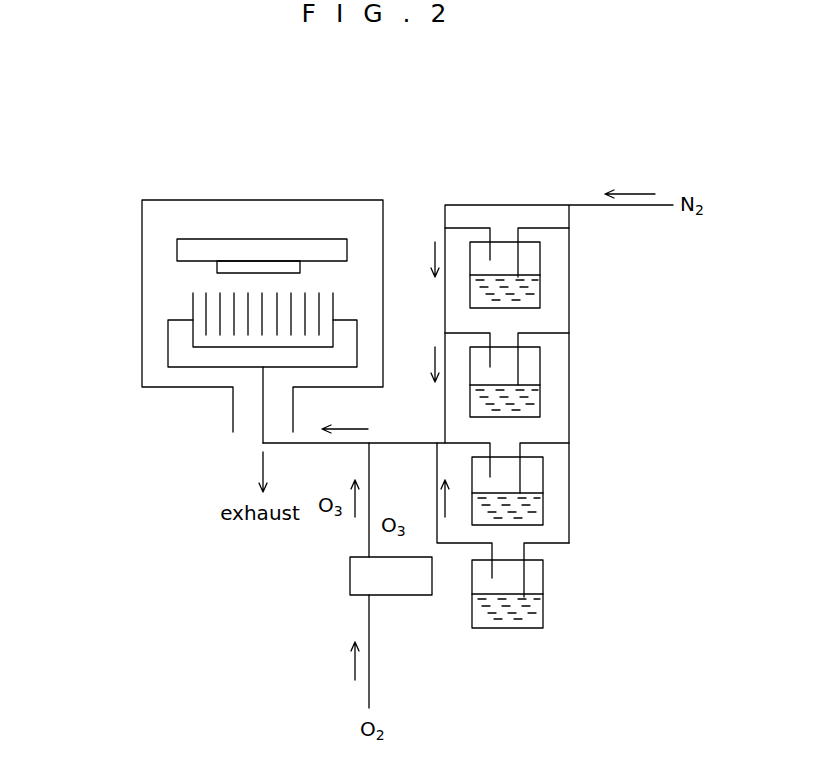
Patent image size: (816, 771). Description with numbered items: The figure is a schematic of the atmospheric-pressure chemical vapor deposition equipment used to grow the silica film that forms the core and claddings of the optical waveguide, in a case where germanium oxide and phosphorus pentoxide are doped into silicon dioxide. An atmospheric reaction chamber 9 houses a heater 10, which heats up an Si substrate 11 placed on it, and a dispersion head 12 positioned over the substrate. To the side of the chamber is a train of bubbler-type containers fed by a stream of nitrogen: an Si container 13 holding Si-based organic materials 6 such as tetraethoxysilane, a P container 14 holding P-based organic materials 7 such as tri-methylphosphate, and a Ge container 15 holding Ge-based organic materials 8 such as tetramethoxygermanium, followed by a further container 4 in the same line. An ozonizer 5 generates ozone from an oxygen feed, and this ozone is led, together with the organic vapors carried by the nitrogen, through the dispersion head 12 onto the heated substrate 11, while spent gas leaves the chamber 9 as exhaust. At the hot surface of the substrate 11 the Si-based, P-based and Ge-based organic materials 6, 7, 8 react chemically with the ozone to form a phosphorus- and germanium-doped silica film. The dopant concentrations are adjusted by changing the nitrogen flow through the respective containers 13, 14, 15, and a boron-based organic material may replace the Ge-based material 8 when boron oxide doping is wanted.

The water bottle 4 is at (540, 608).
The ozonizer 5 is at (415, 595).
The Si-based organic materials 6 is at (537, 288).
The P-based organic materials 7 is at (540, 395).
The Ge-based organic materials 8 is at (540, 503).
The atmospheric reaction chamber 9 is at (248, 199).
The heater 10 is at (190, 239).
The Si substrate 11 is at (218, 272).
The dispersion head 12 is at (202, 348).
The Si container 13 is at (540, 254).
The P container 14 is at (540, 362).
The Ge container 15 is at (543, 470).